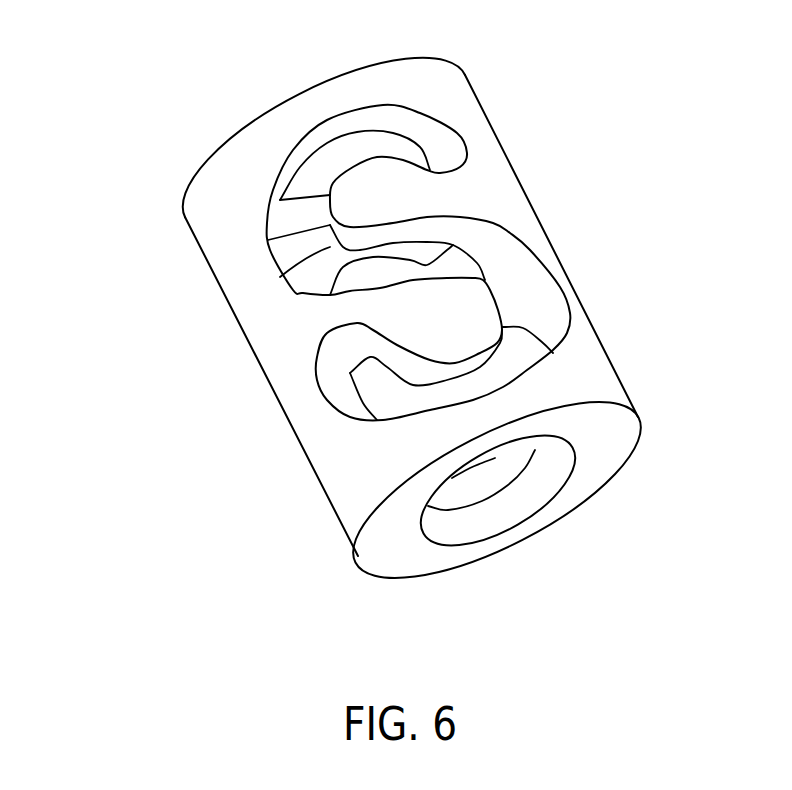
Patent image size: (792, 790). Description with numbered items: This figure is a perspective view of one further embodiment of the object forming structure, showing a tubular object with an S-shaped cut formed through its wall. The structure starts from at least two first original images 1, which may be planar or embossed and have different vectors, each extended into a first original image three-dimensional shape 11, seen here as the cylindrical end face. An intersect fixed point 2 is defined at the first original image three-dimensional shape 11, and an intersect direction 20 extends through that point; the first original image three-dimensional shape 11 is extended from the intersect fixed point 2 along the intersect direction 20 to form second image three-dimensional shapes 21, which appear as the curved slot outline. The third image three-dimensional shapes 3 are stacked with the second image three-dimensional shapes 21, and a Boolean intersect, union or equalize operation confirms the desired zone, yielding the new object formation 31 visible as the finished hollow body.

The first original image 1 is at (476, 358).
The first original image three-dimensional shape 11 is at (385, 597).
The intersect fixed point 2 is at (352, 123).
The intersect direction 20 is at (264, 242).
The second image three-dimensional shape 21 is at (313, 127).
The third image three-dimensional shape 3 is at (587, 520).
The new object formation 31 is at (498, 490).